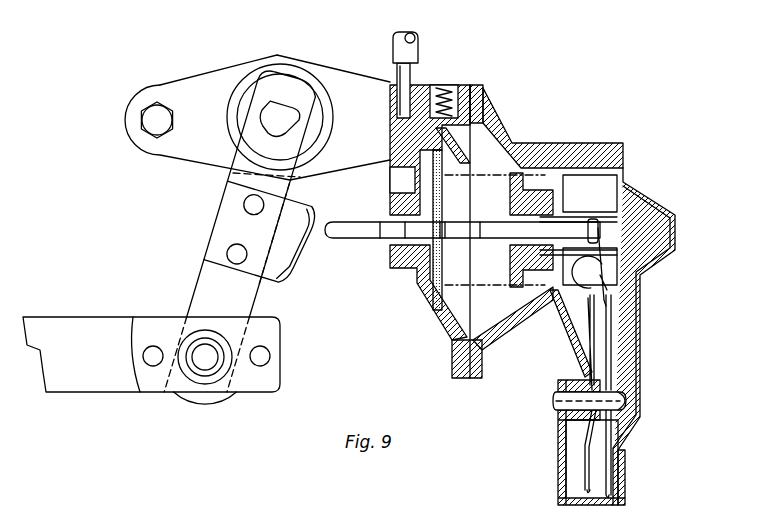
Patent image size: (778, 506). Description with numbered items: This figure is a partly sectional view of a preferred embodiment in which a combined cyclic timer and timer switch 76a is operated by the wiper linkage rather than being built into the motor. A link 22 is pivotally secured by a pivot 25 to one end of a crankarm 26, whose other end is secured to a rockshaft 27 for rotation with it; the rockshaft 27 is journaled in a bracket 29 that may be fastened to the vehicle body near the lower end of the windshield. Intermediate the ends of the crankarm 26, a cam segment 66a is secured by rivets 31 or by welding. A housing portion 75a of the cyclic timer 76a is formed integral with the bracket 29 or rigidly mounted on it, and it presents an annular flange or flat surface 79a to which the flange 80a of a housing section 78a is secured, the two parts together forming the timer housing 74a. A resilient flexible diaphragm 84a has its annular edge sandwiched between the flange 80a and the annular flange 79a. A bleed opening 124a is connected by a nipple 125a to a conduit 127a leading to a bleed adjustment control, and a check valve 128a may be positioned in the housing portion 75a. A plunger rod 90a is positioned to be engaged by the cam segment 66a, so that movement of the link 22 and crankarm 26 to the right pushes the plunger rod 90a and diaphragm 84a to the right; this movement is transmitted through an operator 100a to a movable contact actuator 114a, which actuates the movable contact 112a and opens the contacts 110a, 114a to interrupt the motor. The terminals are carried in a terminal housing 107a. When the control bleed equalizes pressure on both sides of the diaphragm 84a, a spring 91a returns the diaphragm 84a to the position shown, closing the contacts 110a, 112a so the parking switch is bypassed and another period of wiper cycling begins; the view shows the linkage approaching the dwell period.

The link 22 is at (80, 378).
The pivot 25 is at (205, 365).
The crankarm 26 is at (232, 294).
The rockshaft 27 is at (275, 115).
The bracket 29 is at (190, 88).
The rivets 31 is at (248, 205).
The cam segment 66a is at (215, 225).
The timer housing 74a is at (470, 135).
The housing portion 75a is at (418, 305).
The cyclic timer 76a is at (476, 85).
The housing section 78a is at (500, 327).
The annular flange 79a is at (468, 378).
The flange 80a is at (487, 90).
The diaphragm 84a is at (510, 150).
The plunger rod 90a is at (462, 231).
The spring 91a is at (625, 158).
The operator 100a is at (518, 264).
The terminal housing 107a is at (642, 360).
The contact 110a is at (605, 300).
The movable contact 112a is at (605, 335).
The movable contact actuator 114a is at (612, 268).
The bleed opening 124a is at (392, 128).
The nipple 125a is at (410, 75).
The conduit 127a is at (414, 44).
The check valve 128a is at (444, 90).